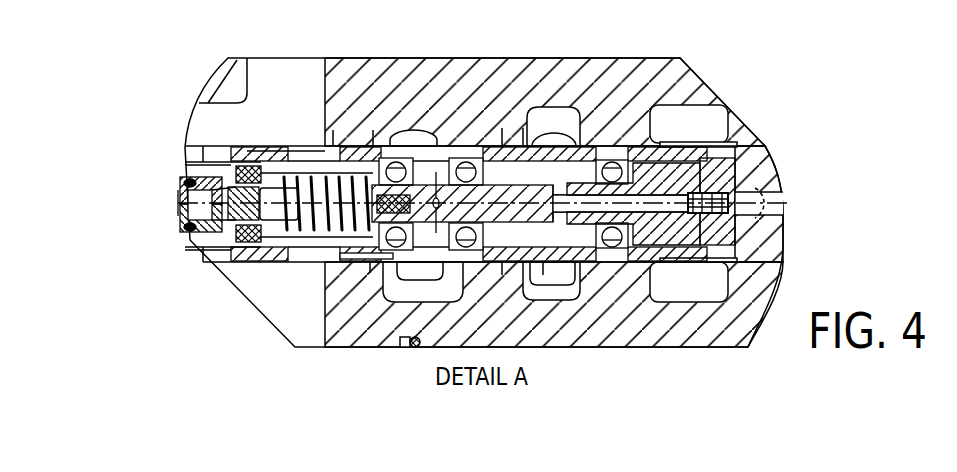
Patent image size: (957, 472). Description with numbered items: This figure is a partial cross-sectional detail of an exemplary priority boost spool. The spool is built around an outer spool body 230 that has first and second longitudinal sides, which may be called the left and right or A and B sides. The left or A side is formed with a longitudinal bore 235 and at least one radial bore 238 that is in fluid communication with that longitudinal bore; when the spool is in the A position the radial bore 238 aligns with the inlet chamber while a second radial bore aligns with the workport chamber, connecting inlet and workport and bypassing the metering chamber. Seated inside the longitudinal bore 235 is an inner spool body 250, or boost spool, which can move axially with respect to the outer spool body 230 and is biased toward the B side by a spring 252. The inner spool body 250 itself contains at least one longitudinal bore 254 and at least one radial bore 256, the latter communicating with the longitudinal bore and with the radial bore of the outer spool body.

The outer spool body 230 is at (582, 146).
The longitudinal bore 235 is at (542, 172).
The radial bore 238 is at (462, 146).
The inner spool body 250 is at (684, 215).
The spring 252 is at (318, 180).
The longitudinal bore 254 is at (657, 208).
The radial bore 256 is at (568, 173).